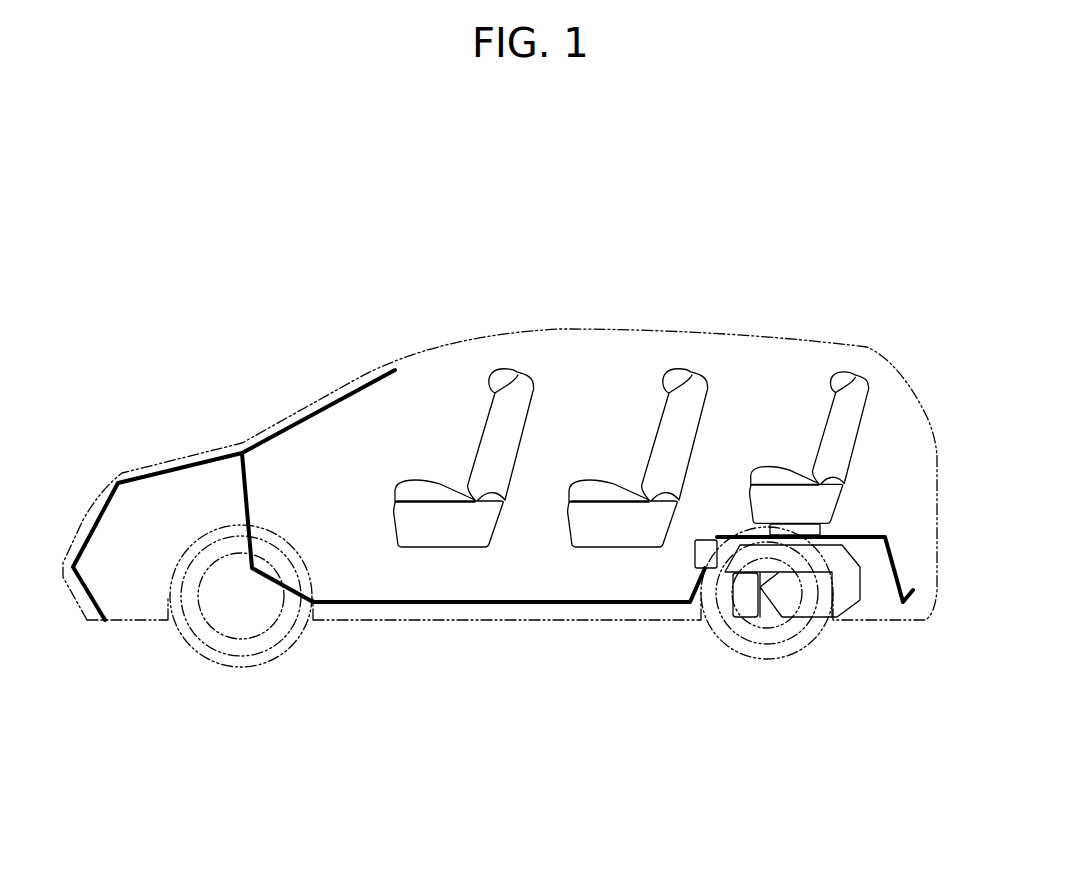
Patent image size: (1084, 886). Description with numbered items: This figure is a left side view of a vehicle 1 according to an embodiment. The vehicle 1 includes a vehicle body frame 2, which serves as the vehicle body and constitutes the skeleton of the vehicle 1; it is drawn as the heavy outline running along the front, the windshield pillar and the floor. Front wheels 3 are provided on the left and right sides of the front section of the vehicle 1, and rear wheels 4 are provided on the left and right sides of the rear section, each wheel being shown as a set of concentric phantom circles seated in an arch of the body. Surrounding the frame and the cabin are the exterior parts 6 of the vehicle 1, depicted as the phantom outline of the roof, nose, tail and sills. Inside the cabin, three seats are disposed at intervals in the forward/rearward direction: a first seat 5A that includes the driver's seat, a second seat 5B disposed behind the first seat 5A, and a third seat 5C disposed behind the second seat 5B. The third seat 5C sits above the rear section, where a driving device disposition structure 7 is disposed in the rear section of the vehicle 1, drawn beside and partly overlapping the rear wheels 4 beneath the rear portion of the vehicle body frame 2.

The vehicle 1 is at (902, 187).
The vehicle body frame 2 is at (388, 602).
The front wheels 3 is at (240, 664).
The rear wheels 4 is at (760, 660).
The first seat 5A is at (530, 378).
The second seat 5B is at (703, 378).
The third seat 5C is at (862, 378).
The exterior parts 6 is at (902, 370).
The driving device disposition structure 7 is at (874, 607).